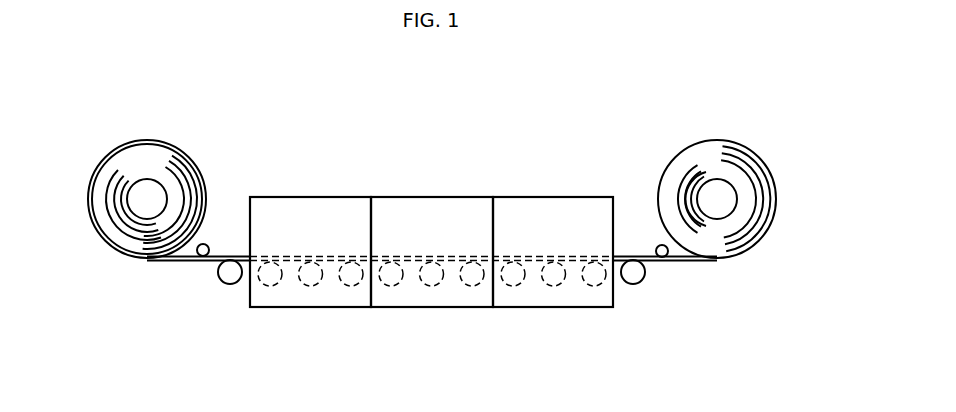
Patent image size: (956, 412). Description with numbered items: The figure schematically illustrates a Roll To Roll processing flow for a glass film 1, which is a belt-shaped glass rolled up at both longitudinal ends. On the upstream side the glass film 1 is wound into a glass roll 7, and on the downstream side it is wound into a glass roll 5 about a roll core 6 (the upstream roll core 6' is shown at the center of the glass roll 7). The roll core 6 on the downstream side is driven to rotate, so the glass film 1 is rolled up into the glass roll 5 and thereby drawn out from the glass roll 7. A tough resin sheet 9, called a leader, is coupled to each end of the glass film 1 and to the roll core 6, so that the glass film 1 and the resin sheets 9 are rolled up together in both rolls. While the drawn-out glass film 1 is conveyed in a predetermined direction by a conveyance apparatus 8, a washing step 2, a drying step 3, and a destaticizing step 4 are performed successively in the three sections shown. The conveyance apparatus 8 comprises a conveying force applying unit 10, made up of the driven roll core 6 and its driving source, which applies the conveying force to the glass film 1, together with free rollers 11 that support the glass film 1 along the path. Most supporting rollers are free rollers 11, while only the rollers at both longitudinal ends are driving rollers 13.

The glass film 1 is at (222, 250).
The washing step 2 is at (318, 191).
The drying step 3 is at (430, 191).
The destaticizing step 4 is at (554, 191).
The glass roll 5 is at (710, 157).
The roll core 6 is at (750, 199).
The feed roll core 6' is at (112, 197).
The glass roll 7 is at (138, 159).
The conveyance apparatus 8 is at (437, 258).
The resin sheet 9 is at (112, 228).
The conveying force applying unit 10 is at (688, 177).
The free rollers 11 is at (515, 284).
The driving rollers 13 is at (219, 284).